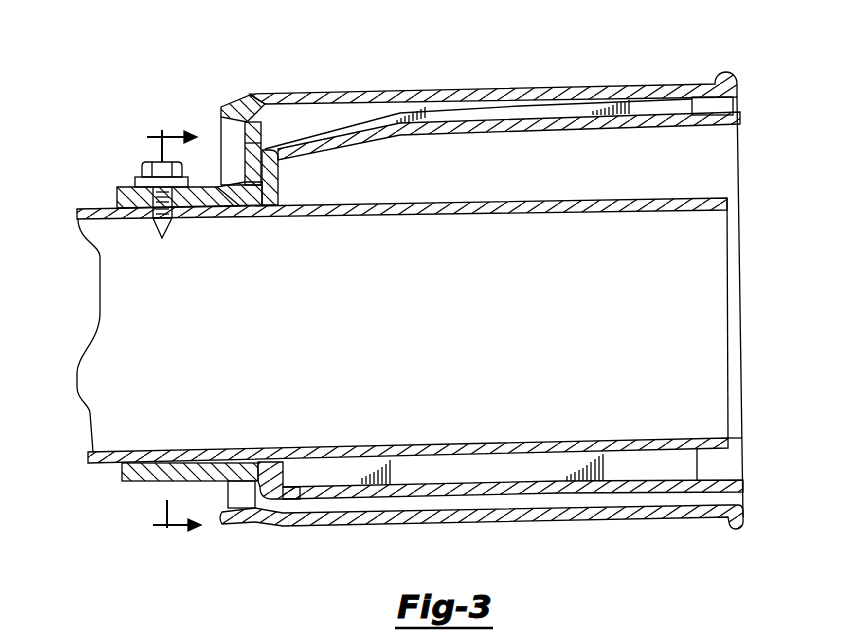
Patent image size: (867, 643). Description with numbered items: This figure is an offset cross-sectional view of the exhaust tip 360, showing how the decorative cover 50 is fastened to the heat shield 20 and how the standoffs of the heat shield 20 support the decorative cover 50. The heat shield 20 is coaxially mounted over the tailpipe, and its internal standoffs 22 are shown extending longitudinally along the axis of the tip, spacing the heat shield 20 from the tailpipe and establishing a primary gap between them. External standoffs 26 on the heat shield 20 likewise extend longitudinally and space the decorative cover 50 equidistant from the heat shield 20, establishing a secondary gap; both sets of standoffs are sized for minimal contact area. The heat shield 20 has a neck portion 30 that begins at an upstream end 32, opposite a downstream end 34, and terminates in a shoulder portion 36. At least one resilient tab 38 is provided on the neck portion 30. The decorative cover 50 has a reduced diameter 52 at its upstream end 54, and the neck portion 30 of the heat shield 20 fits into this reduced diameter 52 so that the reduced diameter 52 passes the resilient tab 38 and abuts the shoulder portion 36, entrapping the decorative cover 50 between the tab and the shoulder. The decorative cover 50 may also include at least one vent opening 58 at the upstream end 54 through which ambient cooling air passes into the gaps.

The exhaust pipe assembly 360 is at (128, 92).
The heat shield 20 is at (687, 123).
The internal standoffs 22 is at (655, 480).
The external standoffs 26 is at (652, 106).
The neck portion 30 is at (137, 477).
The upstream end 32 is at (116, 197).
The downstream end 34 is at (733, 443).
The shoulder portion 36 is at (278, 153).
The resilient tab 38 is at (228, 196).
The decorative cover 50 is at (486, 93).
The reduced diameter 52 is at (262, 480).
The upstream end 54 is at (222, 518).
The vent opening 58 is at (256, 135).